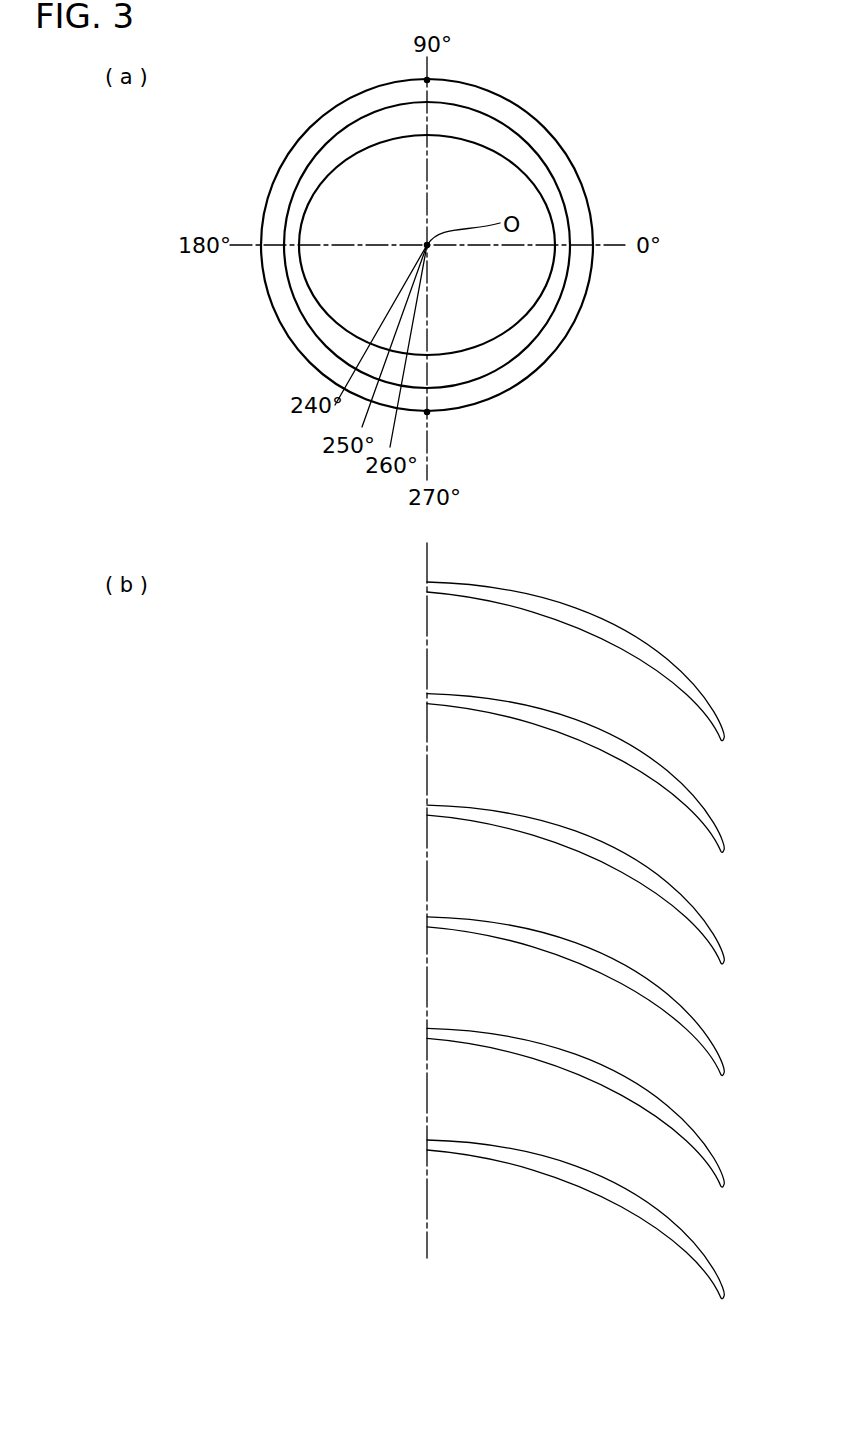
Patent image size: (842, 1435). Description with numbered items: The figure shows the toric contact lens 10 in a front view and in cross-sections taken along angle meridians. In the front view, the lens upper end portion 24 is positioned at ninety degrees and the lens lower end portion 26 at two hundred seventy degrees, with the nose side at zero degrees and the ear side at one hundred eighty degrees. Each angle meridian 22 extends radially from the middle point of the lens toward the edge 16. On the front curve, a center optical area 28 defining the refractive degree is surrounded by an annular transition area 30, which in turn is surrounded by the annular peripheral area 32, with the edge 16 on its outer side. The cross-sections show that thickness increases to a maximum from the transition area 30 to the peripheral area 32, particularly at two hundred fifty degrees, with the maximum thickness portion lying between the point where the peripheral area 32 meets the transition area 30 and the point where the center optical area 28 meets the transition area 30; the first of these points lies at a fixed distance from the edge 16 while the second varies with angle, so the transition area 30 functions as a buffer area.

The toric contact lens 10 is at (501, 667).
The edge 16 is at (548, 362).
The angle meridian 22 is at (385, 313).
The lens upper end portion 24 is at (428, 79).
The lens lower end portion 26 is at (428, 413).
The center optical area 28 is at (530, 272).
The transition area 30 is at (552, 298).
The peripheral area 32 is at (557, 330).